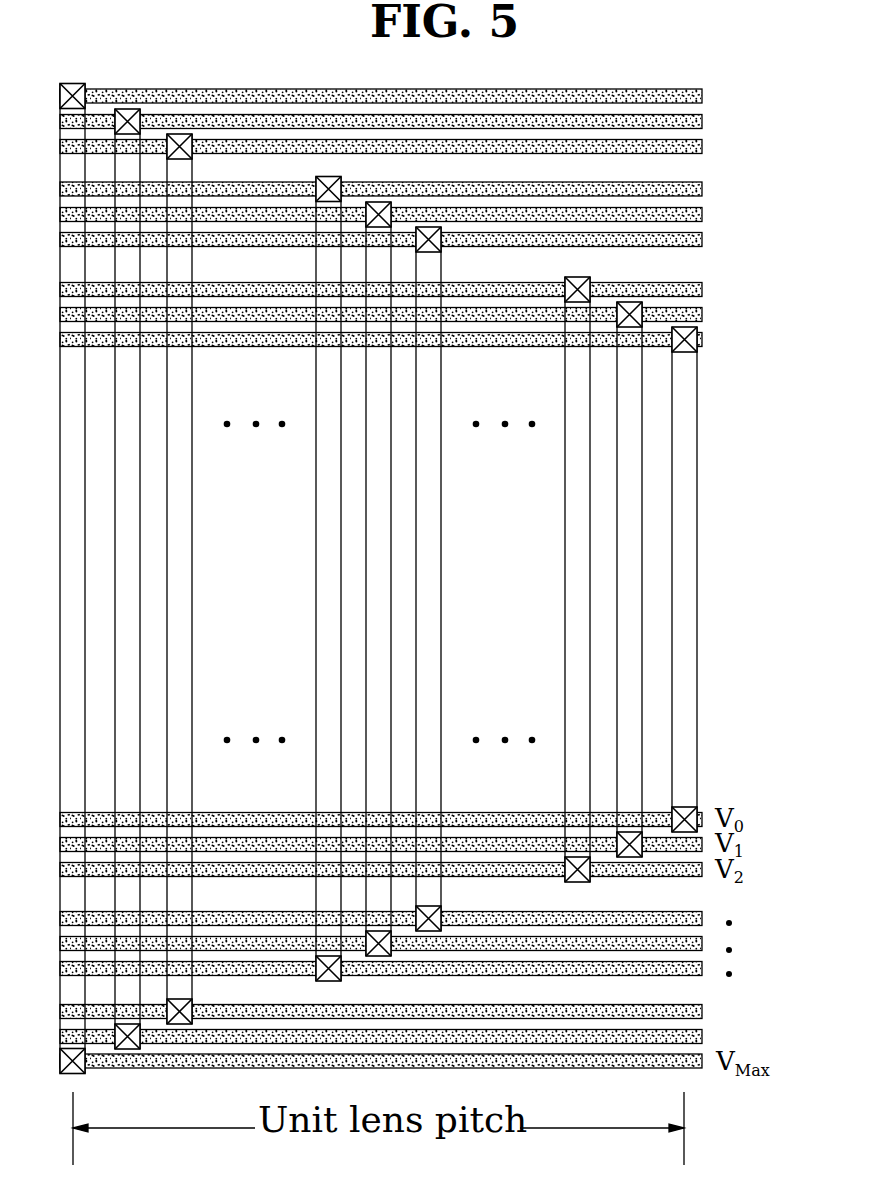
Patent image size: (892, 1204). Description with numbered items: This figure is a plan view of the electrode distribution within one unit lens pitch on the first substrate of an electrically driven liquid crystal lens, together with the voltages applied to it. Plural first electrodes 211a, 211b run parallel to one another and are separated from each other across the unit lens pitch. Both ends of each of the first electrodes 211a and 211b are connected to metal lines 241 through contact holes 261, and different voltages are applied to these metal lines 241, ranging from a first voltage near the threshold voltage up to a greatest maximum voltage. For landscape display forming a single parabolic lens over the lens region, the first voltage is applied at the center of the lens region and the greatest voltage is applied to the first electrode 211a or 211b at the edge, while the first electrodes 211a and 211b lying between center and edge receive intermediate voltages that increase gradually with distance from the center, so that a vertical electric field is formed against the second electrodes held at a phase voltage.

The contact hole 261 is at (700, 338).
The first electrode 211b is at (632, 508).
The first electrode 211a is at (686, 601).
The metal line 241 is at (693, 1058).